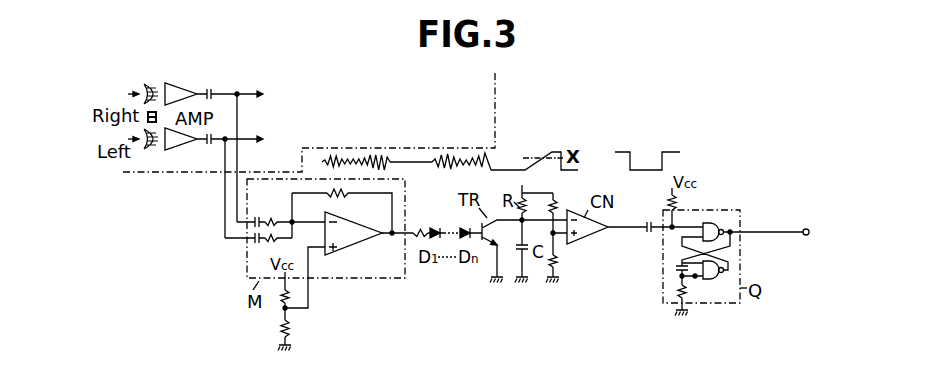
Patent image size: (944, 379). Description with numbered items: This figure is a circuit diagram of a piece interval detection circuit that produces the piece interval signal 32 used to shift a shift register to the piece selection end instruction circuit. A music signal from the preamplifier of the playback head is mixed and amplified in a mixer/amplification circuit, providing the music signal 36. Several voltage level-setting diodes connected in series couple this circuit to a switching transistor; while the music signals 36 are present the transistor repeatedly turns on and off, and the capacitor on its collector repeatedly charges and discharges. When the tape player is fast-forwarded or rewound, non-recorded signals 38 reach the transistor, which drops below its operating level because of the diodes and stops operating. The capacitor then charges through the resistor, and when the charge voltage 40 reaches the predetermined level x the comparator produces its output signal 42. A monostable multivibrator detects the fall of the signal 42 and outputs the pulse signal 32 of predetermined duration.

The music signal 36 is at (375, 158).
The non-recorded signal 38 is at (413, 158).
The charge voltage 40 is at (540, 153).
The comparator output signal 42 is at (668, 151).
The piece interval signal 32 is at (793, 247).